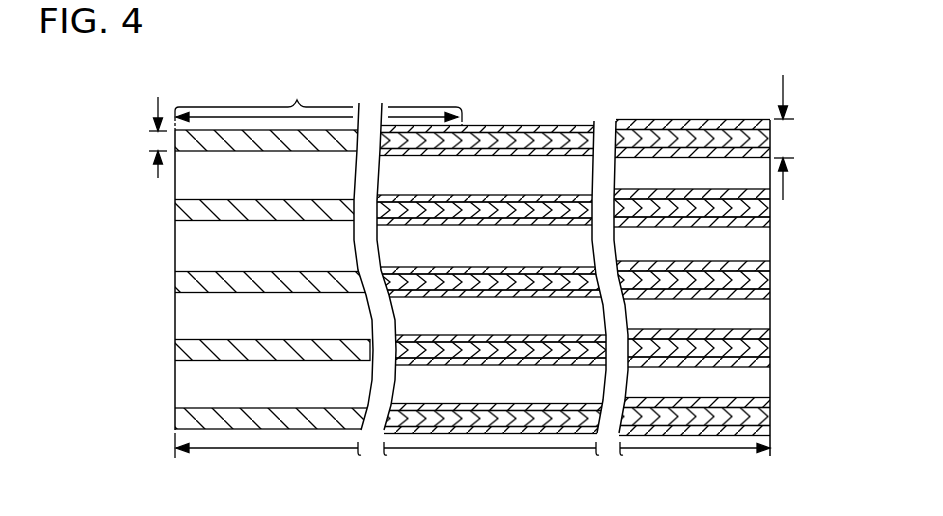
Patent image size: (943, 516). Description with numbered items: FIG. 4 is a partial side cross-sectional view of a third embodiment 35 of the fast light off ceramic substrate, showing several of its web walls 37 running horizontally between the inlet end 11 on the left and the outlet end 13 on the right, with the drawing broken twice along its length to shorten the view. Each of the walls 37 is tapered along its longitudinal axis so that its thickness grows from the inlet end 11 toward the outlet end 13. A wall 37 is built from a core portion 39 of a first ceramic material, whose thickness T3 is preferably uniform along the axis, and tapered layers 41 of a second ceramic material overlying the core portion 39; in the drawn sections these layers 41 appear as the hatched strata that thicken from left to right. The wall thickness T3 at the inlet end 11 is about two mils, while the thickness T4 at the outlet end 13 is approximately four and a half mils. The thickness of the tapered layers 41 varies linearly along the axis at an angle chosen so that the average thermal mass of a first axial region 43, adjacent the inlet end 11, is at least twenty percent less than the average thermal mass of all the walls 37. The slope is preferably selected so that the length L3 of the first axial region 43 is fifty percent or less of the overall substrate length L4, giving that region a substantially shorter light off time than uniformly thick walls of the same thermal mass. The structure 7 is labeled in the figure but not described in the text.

The laminated structure 7 is at (435, 269).
The inlet end 11 is at (168, 340).
The outlet end 13 is at (782, 315).
The third embodiment 35 is at (129, 98).
The walls 37 is at (206, 279).
The core portion 39 is at (193, 283).
The tapered layers 41 is at (757, 291).
The first axial region 43 is at (317, 99).
The thickness T3 is at (157, 142).
The thickness T4 is at (786, 137).
The length L3 is at (345, 113).
The length L4 is at (240, 448).